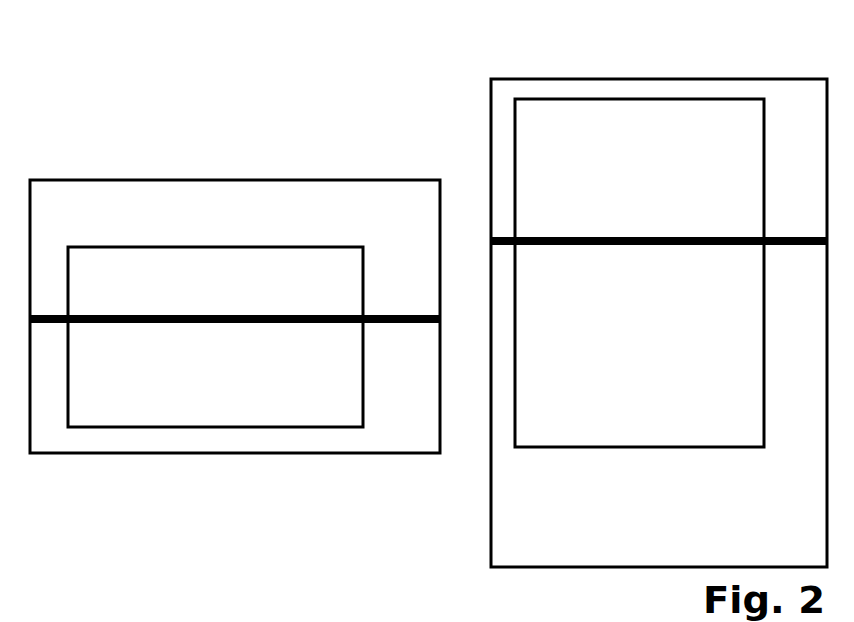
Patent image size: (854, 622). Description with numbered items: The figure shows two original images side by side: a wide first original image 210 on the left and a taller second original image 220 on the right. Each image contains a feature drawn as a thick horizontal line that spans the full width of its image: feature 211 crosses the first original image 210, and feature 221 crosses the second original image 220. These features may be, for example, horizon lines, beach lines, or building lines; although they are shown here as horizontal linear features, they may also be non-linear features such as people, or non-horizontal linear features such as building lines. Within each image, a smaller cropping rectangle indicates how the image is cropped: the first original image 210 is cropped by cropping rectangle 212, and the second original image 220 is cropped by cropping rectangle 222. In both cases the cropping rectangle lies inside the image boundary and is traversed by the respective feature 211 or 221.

The original image 210 is at (221, 180).
The cropping rectangle 212 is at (221, 247).
The feature 211 is at (399, 315).
The original image 220 is at (677, 79).
The cropping rectangle 222 is at (600, 99).
The feature 221 is at (786, 237).